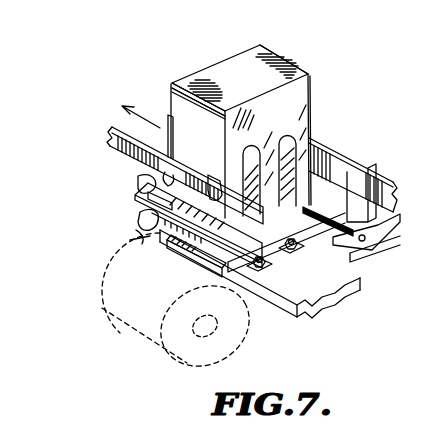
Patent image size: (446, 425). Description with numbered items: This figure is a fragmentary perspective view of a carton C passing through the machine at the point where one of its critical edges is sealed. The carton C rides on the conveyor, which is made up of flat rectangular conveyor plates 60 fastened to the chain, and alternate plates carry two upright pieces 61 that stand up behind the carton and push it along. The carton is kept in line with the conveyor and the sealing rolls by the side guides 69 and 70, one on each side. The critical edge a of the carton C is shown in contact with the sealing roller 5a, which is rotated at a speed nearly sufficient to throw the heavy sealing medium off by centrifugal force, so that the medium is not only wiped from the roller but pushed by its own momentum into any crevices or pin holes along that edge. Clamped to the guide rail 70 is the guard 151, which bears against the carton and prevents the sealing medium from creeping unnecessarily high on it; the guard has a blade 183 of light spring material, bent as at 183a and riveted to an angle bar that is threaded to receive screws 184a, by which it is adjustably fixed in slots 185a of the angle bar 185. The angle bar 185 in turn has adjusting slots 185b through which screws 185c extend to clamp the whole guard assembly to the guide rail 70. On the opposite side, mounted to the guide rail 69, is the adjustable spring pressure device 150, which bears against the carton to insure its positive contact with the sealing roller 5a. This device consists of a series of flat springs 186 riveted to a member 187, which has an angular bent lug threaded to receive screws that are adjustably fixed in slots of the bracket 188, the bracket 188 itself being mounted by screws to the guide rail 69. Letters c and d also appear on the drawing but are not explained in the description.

The carton C is at (241, 131).
The top corner of head unit c is at (289, 62).
The flange of head unit d is at (193, 94).
The upright pieces 61 is at (286, 134).
The side guide 70 is at (122, 142).
The screws 185c is at (168, 153).
The adjusting slots 185b is at (189, 172).
The angle bar 185 is at (151, 186).
The slots 185a is at (155, 200).
The screws 184a is at (142, 212).
The bend of blade 183a is at (150, 227).
The guard 151 is at (130, 242).
The blade 183 is at (187, 269).
The critical edge a is at (170, 262).
The sealing roller 5a is at (120, 307).
The conveyor plates 60 is at (268, 304).
The side guide 69 is at (338, 168).
The bracket 188 is at (357, 215).
The member 187 is at (380, 246).
The spring pressure device 150 is at (340, 216).
The flat springs 186 is at (366, 254).